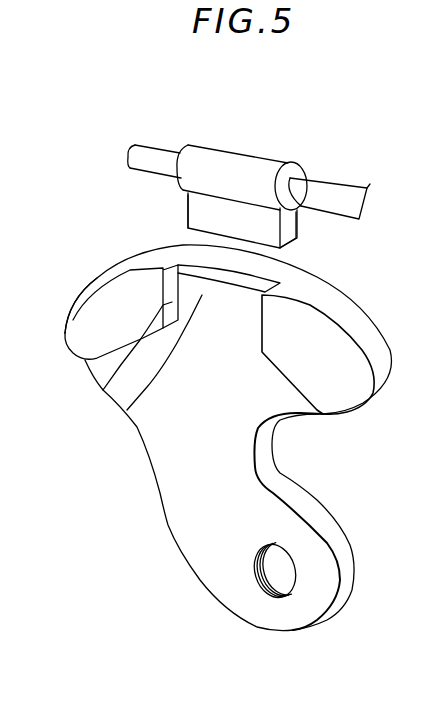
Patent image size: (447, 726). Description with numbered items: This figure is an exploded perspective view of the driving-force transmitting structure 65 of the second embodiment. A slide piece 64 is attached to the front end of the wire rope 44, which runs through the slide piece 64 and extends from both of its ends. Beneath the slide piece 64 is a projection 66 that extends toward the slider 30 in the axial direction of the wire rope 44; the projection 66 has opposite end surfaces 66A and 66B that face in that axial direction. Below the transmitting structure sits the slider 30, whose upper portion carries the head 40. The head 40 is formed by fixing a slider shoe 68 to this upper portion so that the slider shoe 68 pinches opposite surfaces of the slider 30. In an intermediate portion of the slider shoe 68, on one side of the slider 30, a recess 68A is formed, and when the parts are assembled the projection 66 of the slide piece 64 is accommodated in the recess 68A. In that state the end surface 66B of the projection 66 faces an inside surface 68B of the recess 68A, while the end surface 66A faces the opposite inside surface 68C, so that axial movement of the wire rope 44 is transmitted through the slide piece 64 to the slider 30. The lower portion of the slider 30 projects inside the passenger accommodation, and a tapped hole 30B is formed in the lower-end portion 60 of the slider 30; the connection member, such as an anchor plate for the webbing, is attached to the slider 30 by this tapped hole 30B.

The slider 30 is at (270, 520).
The tapped hole 30B is at (285, 598).
The head 40 is at (92, 262).
The wire rope 44 is at (162, 155).
The lower-end portion 60 is at (226, 628).
The slide piece 64 is at (243, 170).
The driving-force transmitting structure 65 is at (112, 212).
The projection 66 is at (272, 221).
The end surface 66A is at (289, 240).
The end surface 66B is at (188, 212).
The slider shoe 68 is at (78, 335).
The recess 68A is at (127, 410).
The inside surface 68B is at (103, 392).
The inside surface 68C is at (260, 318).